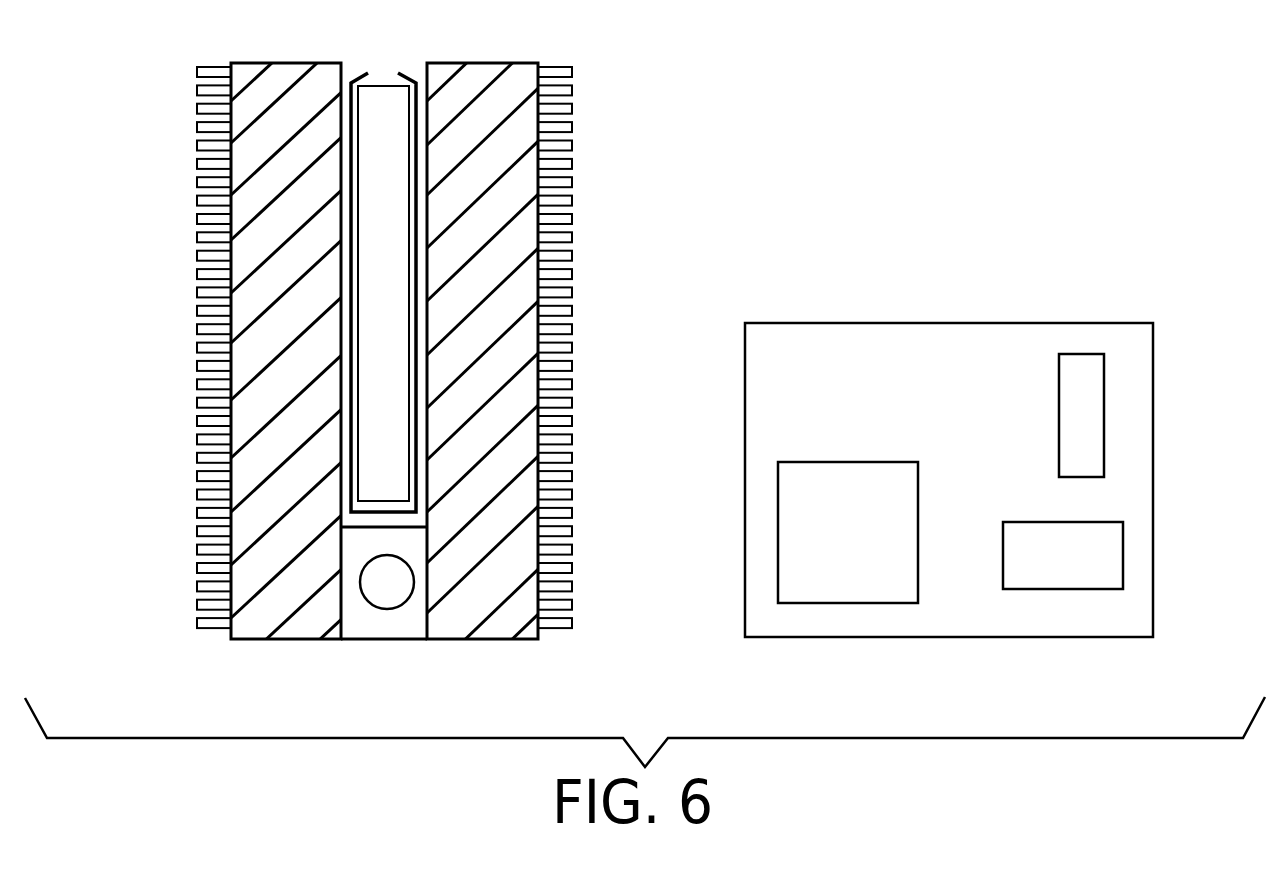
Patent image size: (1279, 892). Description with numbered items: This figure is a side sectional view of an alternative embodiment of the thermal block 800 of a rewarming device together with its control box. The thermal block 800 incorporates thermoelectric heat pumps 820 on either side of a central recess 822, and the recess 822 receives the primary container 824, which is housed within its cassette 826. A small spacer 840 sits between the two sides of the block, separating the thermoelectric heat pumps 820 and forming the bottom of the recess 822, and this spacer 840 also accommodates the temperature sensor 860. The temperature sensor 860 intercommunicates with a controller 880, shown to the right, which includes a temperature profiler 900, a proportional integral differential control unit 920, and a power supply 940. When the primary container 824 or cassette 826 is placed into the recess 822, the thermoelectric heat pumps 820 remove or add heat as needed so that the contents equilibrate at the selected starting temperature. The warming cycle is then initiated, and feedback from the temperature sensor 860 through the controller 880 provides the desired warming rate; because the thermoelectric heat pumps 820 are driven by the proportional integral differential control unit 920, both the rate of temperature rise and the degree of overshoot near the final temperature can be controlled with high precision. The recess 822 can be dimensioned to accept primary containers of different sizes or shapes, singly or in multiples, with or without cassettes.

The thermal block 800 is at (609, 238).
The thermoelectric heat pumps 820 is at (253, 145).
The recess 822 is at (343, 240).
The primary container 824 is at (370, 343).
The cassette 826 is at (341, 448).
The spacer 840 is at (410, 628).
The temperature sensor 860 is at (376, 604).
The controller 880 is at (966, 302).
The temperature profiler 900 is at (1103, 398).
The proportional integral differential control unit 920 is at (1120, 545).
The power supply 940 is at (782, 557).